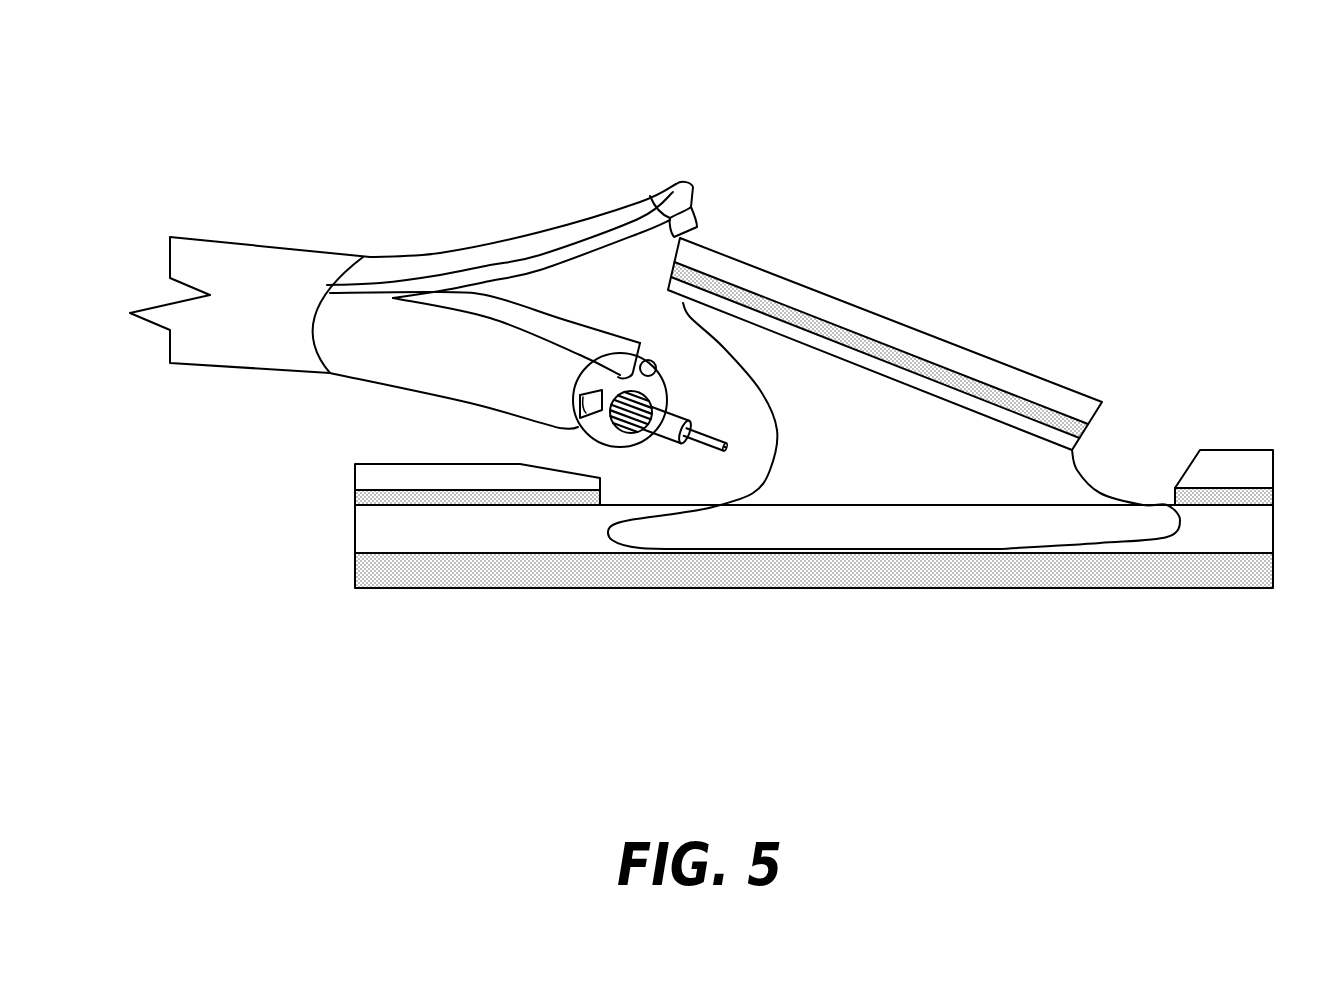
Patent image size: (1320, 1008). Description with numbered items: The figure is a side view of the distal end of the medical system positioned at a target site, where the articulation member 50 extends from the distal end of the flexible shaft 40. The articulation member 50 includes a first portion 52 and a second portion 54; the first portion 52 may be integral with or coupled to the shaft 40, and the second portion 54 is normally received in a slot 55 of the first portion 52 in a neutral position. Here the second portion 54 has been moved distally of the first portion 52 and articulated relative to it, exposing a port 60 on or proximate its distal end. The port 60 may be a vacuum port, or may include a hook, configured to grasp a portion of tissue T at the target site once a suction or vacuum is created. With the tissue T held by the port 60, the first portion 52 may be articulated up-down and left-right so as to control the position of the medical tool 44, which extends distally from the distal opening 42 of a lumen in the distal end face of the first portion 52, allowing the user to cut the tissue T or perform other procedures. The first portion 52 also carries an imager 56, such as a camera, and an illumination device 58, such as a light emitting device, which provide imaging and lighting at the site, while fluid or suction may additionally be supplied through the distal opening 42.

The articulation member 50 is at (553, 116).
The shaft 40 is at (200, 252).
The distal opening 42 is at (623, 433).
The medical tool 44 is at (665, 423).
The first portion 52 is at (393, 377).
The second portion 54 is at (415, 260).
The slot 55 is at (565, 320).
The imager 56 is at (582, 417).
The illumination device 58 is at (656, 368).
The port 60 is at (690, 222).
The tissue T is at (957, 330).